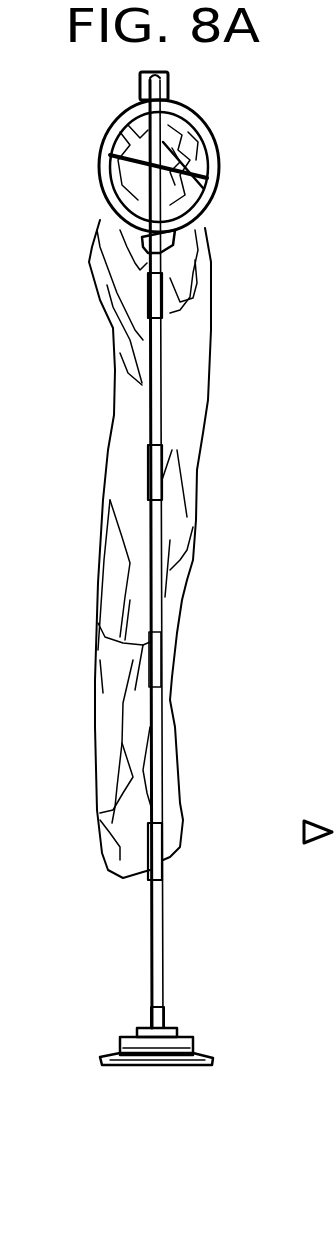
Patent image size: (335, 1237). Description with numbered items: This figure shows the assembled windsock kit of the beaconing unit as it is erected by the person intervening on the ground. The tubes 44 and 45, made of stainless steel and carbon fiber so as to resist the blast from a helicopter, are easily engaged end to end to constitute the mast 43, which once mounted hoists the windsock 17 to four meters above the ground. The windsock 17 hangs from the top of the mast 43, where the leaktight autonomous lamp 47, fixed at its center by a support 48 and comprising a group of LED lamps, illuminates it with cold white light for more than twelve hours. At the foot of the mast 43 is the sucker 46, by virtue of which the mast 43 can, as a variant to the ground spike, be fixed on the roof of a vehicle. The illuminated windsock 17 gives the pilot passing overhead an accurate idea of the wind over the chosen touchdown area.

The windsock 17 is at (193, 327).
The mast 43 is at (162, 642).
The tube 44 is at (140, 95).
The tube 45 is at (160, 388).
The sucker 46 is at (126, 1038).
The leaktight autonomous lamp 47 is at (168, 150).
The support 48 is at (200, 203).